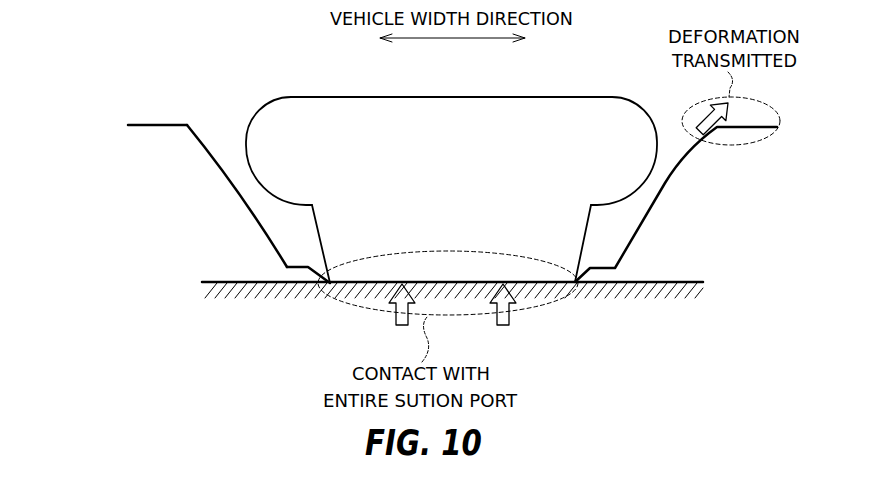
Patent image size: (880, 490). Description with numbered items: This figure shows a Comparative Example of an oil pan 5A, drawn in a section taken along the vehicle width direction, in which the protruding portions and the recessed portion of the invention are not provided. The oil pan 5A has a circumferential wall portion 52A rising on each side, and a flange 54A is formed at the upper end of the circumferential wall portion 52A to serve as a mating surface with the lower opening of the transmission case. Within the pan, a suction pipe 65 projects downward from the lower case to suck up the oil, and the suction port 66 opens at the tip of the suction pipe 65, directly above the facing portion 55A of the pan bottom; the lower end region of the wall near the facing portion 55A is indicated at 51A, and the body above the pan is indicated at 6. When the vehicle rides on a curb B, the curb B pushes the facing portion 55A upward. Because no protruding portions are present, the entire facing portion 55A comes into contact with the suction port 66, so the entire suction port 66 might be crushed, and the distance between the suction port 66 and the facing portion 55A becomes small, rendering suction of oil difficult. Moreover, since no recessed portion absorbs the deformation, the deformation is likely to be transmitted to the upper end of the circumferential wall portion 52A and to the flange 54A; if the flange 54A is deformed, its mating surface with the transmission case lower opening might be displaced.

The tire 6 is at (574, 86).
The oil pan 5A is at (398, 240).
The tip portion 51A is at (297, 268).
The circumferential wall portion 52A is at (238, 188).
The flange 54A is at (143, 128).
The facing portion 55A is at (548, 305).
The suction pipe 65 is at (587, 240).
The suction port 66 is at (303, 268).
The curb B is at (697, 282).